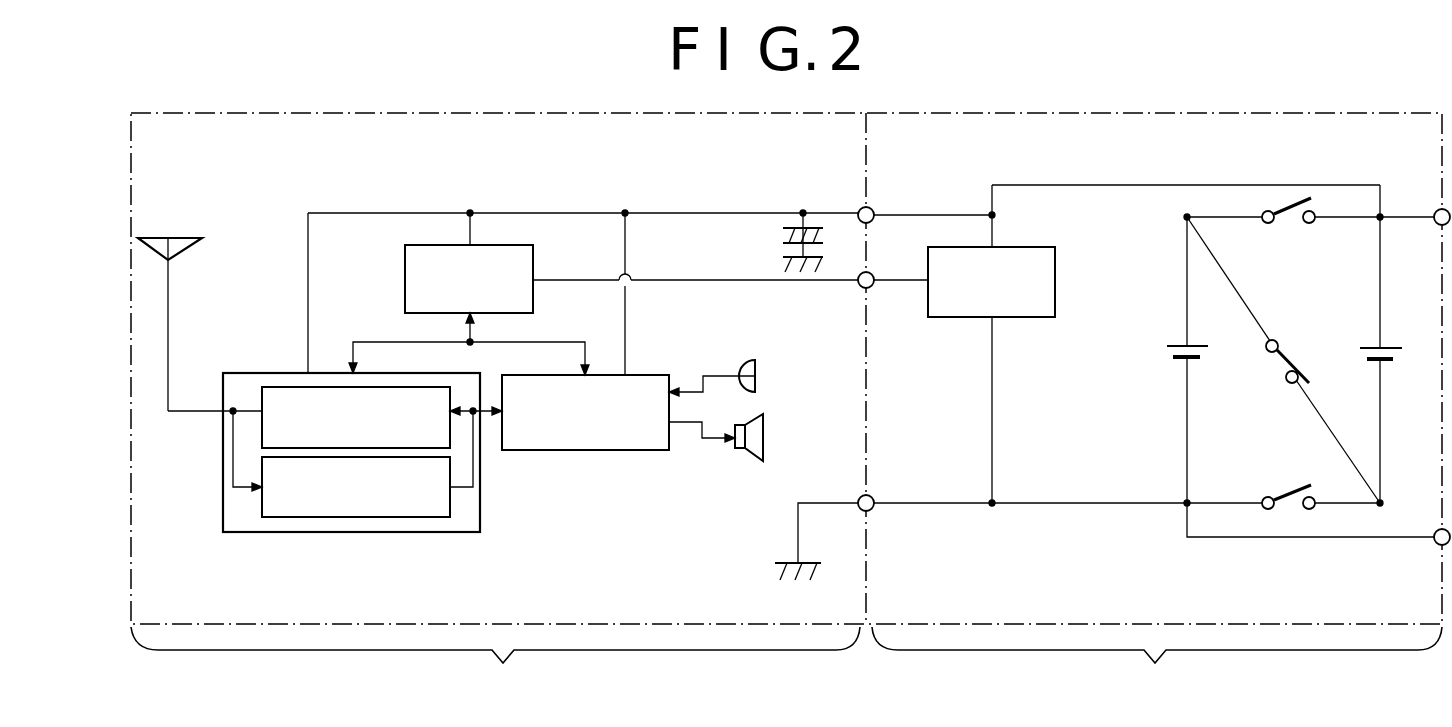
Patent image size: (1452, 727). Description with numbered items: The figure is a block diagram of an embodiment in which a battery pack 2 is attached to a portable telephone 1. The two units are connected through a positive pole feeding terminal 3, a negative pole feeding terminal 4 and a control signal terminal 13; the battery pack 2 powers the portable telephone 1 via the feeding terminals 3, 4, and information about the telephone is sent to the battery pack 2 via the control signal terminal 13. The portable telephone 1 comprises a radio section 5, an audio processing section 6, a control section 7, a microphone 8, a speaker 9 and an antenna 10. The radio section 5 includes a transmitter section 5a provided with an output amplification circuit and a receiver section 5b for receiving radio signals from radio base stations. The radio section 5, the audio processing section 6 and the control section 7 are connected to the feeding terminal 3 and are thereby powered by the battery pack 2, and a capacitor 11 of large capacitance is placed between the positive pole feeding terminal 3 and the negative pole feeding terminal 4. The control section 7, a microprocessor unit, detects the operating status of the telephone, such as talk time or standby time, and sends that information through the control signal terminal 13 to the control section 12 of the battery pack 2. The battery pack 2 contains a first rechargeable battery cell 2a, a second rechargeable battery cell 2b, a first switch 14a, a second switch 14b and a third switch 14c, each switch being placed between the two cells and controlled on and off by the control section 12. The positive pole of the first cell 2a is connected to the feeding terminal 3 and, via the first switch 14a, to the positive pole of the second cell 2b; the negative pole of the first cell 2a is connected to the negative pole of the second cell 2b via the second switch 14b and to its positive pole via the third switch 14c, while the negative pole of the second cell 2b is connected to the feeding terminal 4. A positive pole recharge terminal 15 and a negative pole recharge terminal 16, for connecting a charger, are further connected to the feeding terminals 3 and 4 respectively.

The portable telephone 1 is at (495, 665).
The battery pack 2 is at (1157, 665).
The first rechargeable battery cell 2a is at (1390, 365).
The second rechargeable battery cell 2b is at (1166, 352).
The positive pole feeding terminal 3 is at (872, 209).
The negative pole feeding terminal 4 is at (873, 509).
The radio section 5 is at (351, 455).
The transmitter section 5a is at (287, 387).
The receiver section 5b is at (318, 517).
The audio processing section 6 is at (578, 450).
The control section 7 is at (405, 283).
The microphone 8 is at (768, 380).
The speaker 9 is at (770, 438).
The antenna 10 is at (172, 238).
The capacitor 11 is at (786, 240).
The control section of the battery pack 12 is at (1055, 282).
The control signal terminal 13 is at (872, 287).
The first switch 14a is at (1290, 203).
The second switch 14b is at (1290, 495).
The third switch 14c is at (1298, 362).
The positive pole recharge terminal 15 is at (1436, 211).
The negative pole recharge terminal 16 is at (1437, 546).